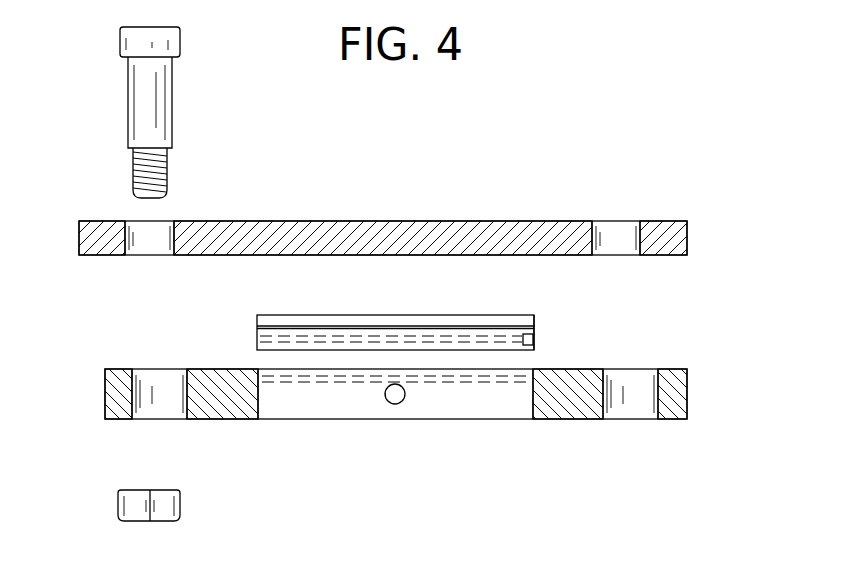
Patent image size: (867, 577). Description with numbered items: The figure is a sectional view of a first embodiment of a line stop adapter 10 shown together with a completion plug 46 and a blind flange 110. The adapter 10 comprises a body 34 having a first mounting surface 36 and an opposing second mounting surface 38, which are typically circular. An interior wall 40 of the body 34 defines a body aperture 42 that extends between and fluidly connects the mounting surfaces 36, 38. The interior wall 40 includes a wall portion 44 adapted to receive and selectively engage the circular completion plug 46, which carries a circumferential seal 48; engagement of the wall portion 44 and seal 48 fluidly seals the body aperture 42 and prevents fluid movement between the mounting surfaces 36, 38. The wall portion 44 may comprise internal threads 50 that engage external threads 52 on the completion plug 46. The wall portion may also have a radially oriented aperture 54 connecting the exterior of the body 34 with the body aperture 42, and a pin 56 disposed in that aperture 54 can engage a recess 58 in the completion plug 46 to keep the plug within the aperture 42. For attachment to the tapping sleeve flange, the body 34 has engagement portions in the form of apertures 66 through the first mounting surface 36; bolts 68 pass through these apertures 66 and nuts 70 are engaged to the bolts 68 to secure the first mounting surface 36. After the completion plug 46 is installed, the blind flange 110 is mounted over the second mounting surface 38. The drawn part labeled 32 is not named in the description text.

The line stop adapter 10 is at (74, 322).
The base plate 32 is at (388, 413).
The body 34 is at (105, 398).
The first mounting surface 36 is at (565, 420).
The second mounting surface 38 is at (672, 368).
The interior wall 40 is at (258, 406).
The body aperture 42 is at (328, 408).
The wall portion 44 is at (530, 390).
The completion plug 46 is at (535, 331).
The circumferential seal 48 is at (400, 312).
The internal threads 50 is at (480, 401).
The external threads 52 is at (355, 338).
The radially oriented aperture 54 is at (402, 401).
The pin 56 is at (386, 398).
The recess 58 is at (533, 340).
The apertures 66 is at (165, 412).
The bolts 68 is at (172, 97).
The nuts 70 is at (160, 522).
The blind flange 110 is at (688, 238).